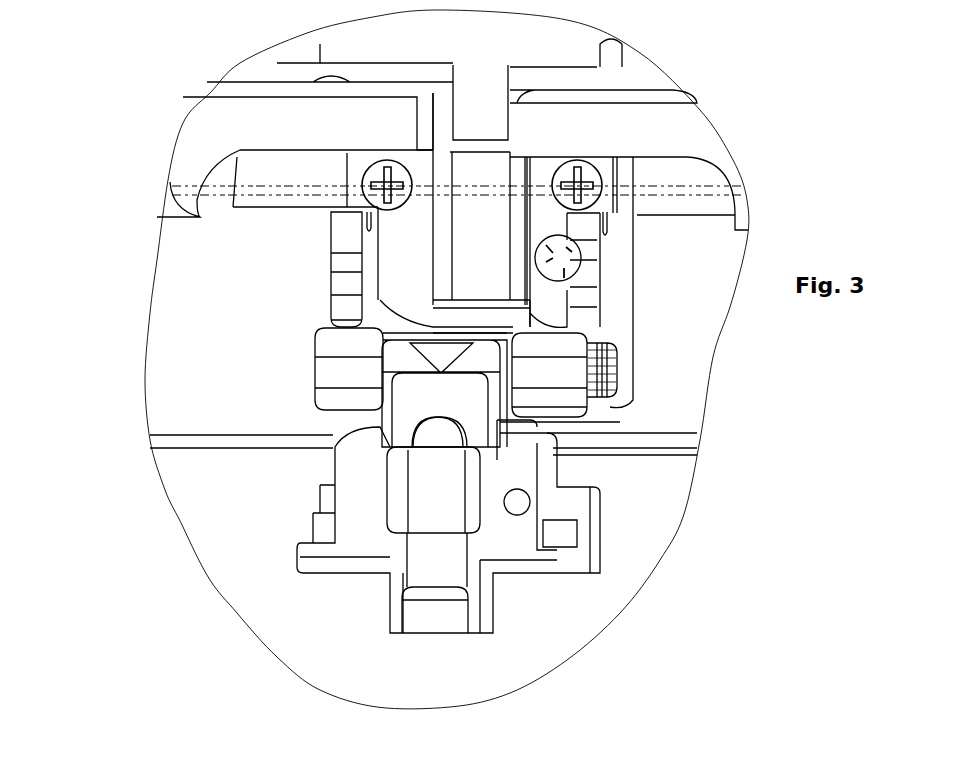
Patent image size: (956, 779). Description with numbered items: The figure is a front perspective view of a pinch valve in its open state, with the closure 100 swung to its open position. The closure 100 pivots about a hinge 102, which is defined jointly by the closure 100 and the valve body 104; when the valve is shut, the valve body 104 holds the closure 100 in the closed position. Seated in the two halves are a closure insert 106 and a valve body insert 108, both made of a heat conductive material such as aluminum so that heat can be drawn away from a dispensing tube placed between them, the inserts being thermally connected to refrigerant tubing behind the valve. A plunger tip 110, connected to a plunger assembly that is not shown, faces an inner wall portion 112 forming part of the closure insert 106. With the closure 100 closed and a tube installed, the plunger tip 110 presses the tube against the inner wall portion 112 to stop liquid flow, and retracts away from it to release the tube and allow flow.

The closure 100 is at (335, 575).
The hinge 102 is at (553, 385).
The valve body 104 is at (615, 292).
The closure insert 106 is at (433, 487).
The valve body insert 108 is at (472, 212).
The plunger tip 110 is at (477, 327).
The inner wall portion 112 is at (412, 400).